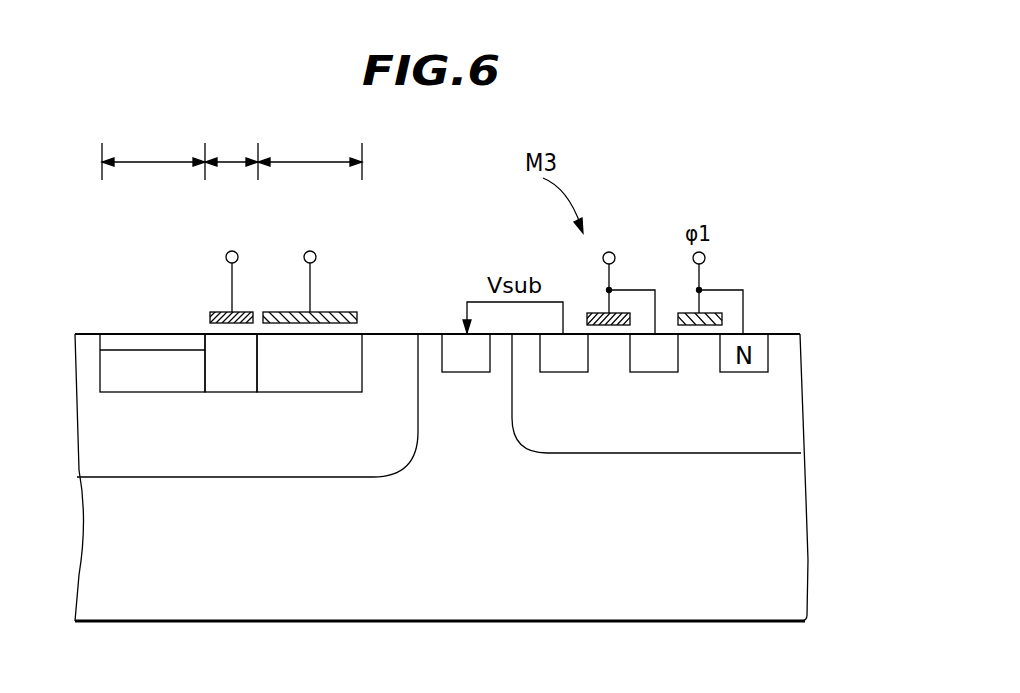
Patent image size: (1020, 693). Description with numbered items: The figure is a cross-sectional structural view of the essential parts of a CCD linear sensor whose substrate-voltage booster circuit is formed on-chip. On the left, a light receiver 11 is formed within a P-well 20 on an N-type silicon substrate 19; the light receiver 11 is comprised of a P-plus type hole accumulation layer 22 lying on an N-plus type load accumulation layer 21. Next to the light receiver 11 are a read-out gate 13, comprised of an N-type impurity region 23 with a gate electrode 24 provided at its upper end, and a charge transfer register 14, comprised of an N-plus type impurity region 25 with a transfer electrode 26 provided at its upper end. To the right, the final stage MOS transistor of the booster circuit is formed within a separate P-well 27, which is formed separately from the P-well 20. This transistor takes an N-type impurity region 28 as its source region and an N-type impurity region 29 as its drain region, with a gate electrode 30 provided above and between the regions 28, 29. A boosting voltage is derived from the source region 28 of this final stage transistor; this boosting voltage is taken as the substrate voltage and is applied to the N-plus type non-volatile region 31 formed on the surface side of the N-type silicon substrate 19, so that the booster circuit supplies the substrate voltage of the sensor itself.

The light receiver 11 is at (153, 154).
The read-out gate 13 is at (231, 154).
The charge transfer register 14 is at (310, 154).
The N-type silicon substrate 19 is at (745, 555).
The P-well 20 is at (107, 453).
The N+ type load accumulation layer 21 is at (110, 381).
The P+ type hole accumulation layer 22 is at (113, 337).
The N-type impurity region 23 is at (218, 343).
The gate electrode 24 is at (243, 312).
The N+ region (CCD channel) 25 is at (353, 367).
The transfer electrode 26 is at (326, 312).
The separate P-well 27 is at (745, 403).
The N-type impurity region (source region) 28 is at (545, 372).
The N-type impurity region (drain region) 29 is at (635, 372).
The gate electrode 30 is at (595, 313).
The N+ type non-volatile region 31 is at (450, 372).